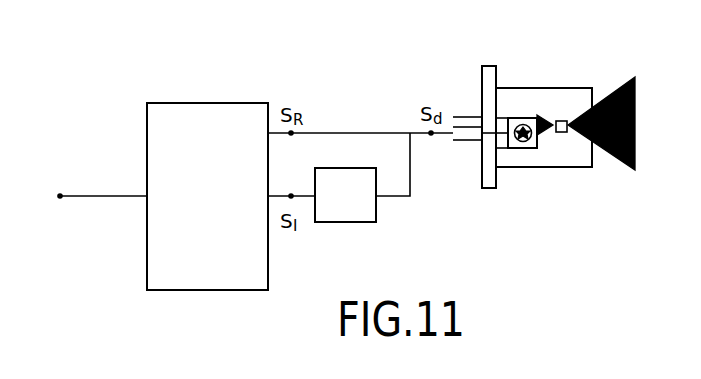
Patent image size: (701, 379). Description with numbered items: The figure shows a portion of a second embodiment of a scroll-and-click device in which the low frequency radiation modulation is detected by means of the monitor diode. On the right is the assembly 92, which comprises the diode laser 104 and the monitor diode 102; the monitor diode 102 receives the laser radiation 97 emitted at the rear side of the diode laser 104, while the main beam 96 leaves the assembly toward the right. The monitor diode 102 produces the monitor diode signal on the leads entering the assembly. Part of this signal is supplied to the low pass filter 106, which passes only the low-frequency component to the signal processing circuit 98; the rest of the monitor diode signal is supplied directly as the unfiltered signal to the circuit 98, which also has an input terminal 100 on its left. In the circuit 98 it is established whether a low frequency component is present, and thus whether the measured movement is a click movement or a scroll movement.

The assembly 92 is at (523, 99).
The light beam 96 is at (632, 170).
The laser radiation 97 is at (543, 127).
The signal processing circuit 98 is at (199, 260).
The input terminal 100 is at (96, 213).
The monitor diode 102 is at (563, 132).
The diode laser 104 is at (523, 148).
The low pass filter 106 is at (337, 198).